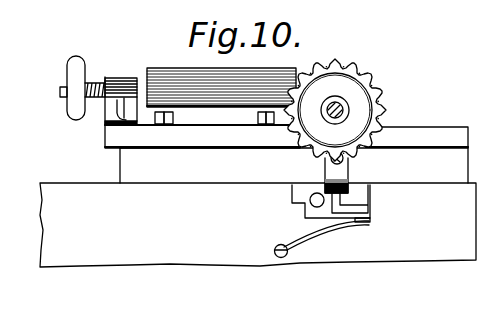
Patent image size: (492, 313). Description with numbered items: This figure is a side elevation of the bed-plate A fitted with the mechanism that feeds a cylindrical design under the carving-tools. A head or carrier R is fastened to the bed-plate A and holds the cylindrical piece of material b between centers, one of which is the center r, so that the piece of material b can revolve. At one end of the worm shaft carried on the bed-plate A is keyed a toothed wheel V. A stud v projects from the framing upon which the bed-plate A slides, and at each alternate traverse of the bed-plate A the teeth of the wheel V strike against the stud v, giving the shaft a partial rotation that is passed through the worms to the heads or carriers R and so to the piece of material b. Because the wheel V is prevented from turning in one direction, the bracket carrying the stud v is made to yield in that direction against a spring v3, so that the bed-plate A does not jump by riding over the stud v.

The center r is at (146, 65).
The piece of material b is at (221, 87).
The head or carrier R is at (202, 112).
The toothed wheel V is at (346, 56).
The bed-plate A is at (417, 151).
The stud v is at (344, 161).
The spring v3 is at (323, 238).